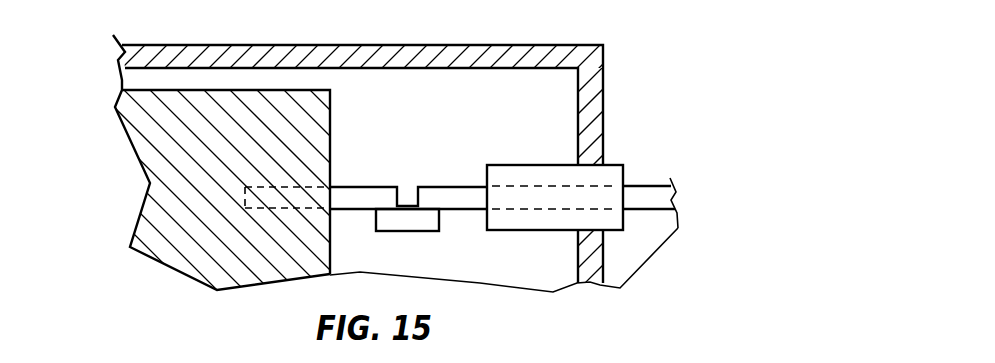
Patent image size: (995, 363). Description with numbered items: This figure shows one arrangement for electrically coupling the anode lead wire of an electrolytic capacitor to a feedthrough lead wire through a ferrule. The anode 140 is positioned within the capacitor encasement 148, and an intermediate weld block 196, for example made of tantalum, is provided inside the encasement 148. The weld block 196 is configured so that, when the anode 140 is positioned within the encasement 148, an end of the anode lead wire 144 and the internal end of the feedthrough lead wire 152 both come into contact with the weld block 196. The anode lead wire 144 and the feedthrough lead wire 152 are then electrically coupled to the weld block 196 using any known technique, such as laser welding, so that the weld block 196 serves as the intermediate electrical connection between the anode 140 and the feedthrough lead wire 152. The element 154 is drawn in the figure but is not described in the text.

The anode 140 is at (193, 133).
The capacitor encasement 148 is at (272, 46).
The anode lead wire 144 is at (353, 193).
The feedthrough lead wire 152 is at (460, 190).
The collar block 154 is at (612, 171).
The intermediate weld block 196 is at (418, 218).